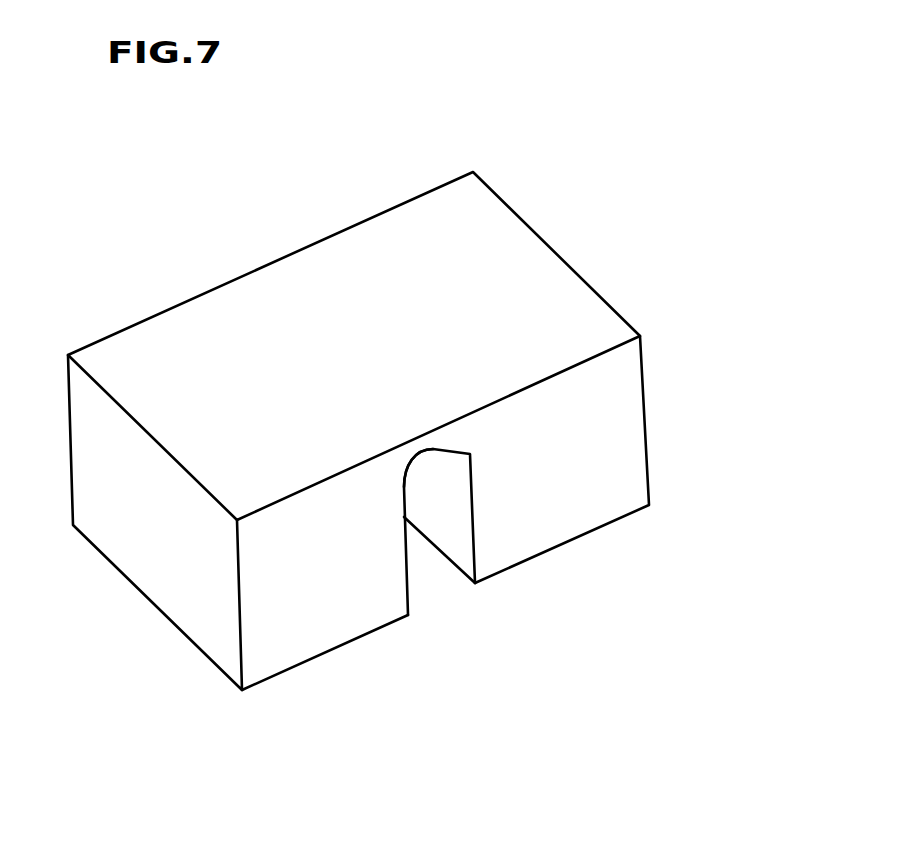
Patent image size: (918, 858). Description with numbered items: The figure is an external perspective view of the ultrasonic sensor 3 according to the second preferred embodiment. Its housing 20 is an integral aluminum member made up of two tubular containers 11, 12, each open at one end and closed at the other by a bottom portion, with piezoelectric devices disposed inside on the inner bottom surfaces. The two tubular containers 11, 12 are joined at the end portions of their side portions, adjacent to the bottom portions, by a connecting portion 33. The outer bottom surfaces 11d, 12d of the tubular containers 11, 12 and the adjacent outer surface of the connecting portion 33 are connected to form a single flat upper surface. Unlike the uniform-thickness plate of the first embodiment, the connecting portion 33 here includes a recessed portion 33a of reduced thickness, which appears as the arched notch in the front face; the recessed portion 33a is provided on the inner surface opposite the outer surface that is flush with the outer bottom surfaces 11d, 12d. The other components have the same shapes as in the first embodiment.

The ultrasonic sensor 3 is at (49, 161).
The housing 20 is at (383, 441).
The tubular container 11 is at (562, 482).
The tubular container 12 is at (318, 592).
The outer bottom surface 11d is at (575, 293).
The outer bottom surface 12d is at (167, 330).
The connecting portion 33 is at (451, 567).
The recessed portion 33a is at (427, 447).